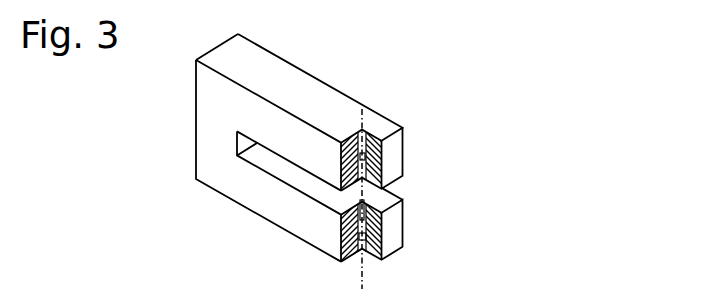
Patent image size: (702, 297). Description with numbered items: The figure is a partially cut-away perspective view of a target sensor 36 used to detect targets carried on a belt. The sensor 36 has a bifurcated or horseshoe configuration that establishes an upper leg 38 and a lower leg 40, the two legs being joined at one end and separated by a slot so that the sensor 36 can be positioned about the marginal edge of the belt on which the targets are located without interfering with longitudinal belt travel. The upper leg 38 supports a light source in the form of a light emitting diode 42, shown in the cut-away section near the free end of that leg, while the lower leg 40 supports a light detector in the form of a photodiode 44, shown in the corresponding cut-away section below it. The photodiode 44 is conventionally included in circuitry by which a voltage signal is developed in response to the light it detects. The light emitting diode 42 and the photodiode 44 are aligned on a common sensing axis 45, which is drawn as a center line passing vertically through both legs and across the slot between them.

The sensor 36 is at (190, 152).
The upper leg 38 is at (290, 92).
The lower leg 40 is at (283, 217).
The light emitting diode 42 is at (341, 174).
The photodiode 44 is at (341, 260).
The common sensing axis 45 is at (362, 266).